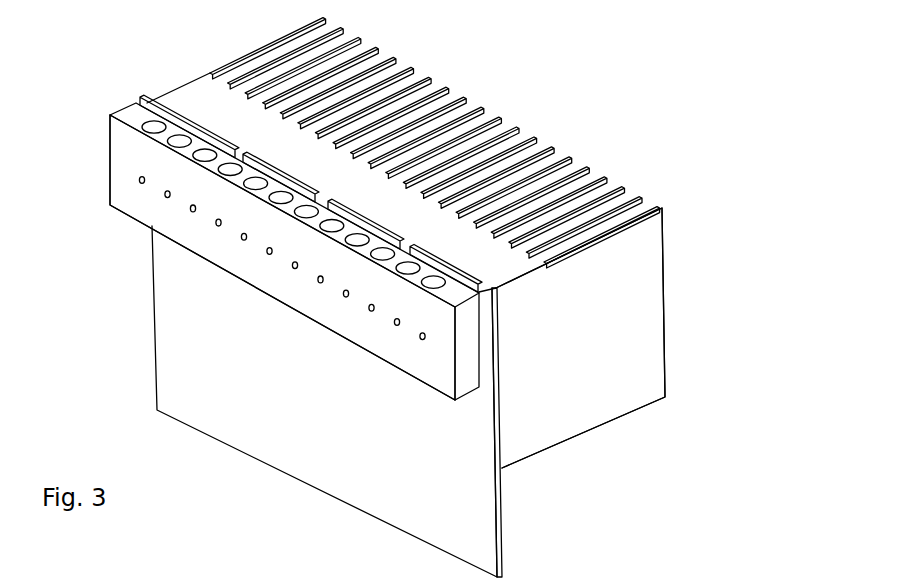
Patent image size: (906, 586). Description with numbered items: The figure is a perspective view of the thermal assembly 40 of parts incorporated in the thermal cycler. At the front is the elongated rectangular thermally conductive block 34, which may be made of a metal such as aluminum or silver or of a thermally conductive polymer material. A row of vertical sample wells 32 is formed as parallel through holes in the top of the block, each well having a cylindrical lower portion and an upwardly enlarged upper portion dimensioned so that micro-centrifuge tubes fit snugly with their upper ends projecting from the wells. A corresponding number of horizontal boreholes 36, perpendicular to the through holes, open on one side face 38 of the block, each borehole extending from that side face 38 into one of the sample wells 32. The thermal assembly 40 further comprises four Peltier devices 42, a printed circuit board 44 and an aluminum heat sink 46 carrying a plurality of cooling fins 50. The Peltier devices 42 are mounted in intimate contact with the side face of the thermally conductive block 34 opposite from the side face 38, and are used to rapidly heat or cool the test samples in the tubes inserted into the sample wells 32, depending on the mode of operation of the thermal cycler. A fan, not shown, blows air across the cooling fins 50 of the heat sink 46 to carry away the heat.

The sample wells 32 is at (205, 153).
The thermally conductive block 34 is at (130, 150).
The horizontal boreholes 36 is at (216, 221).
The side face 38 is at (265, 281).
The thermal assembly 40 is at (481, 78).
The Peltier devices 42 is at (462, 268).
The printed circuit board 44 is at (188, 333).
The heat sink 46 is at (556, 380).
The cooling fins 50 is at (402, 72).